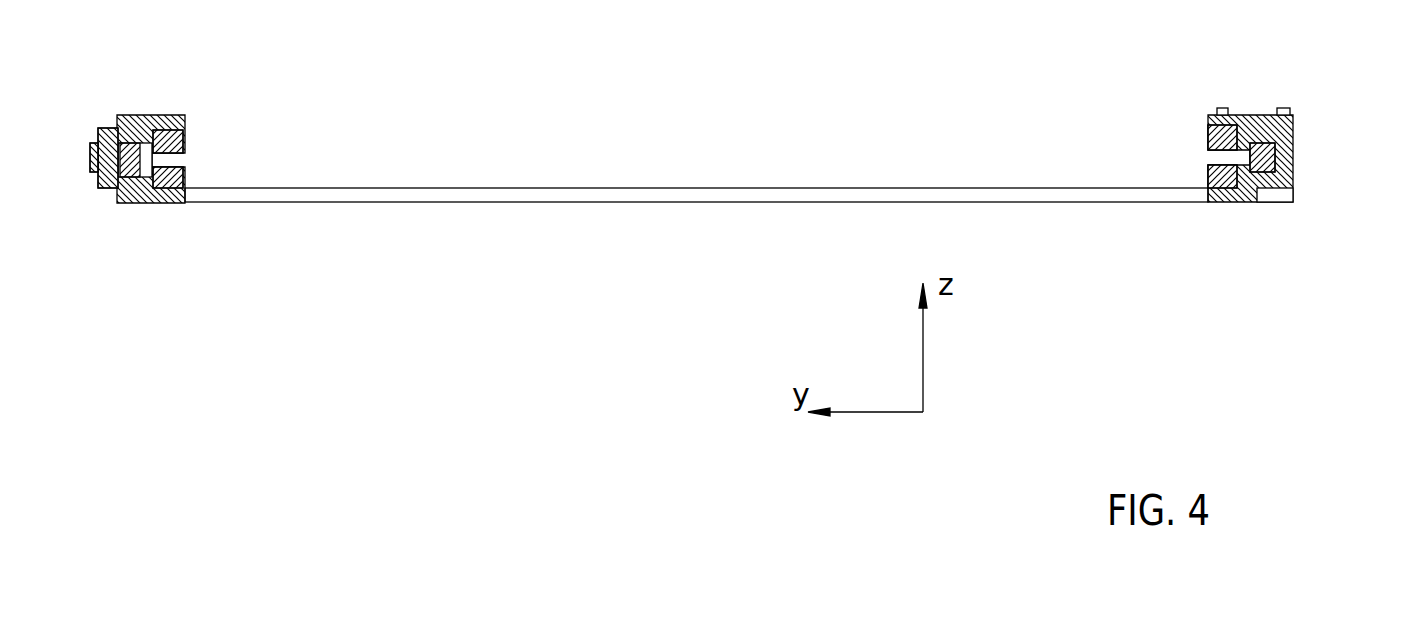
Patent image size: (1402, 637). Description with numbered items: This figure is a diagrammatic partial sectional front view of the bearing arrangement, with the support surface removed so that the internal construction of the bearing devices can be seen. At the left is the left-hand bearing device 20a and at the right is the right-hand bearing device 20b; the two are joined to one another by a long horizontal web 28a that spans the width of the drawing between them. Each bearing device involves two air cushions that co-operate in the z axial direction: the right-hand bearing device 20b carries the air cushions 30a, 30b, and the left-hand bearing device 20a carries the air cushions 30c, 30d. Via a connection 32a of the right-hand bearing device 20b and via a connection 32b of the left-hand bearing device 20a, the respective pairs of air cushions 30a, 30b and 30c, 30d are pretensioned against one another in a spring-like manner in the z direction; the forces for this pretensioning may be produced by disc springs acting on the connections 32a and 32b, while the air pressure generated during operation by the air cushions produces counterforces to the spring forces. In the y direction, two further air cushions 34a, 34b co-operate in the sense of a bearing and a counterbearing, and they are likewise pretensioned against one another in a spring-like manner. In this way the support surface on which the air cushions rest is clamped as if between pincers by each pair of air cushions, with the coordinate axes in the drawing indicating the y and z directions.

The left-hand bearing device 20a is at (146, 190).
The right-hand bearing device 20b is at (1251, 216).
The web 28a is at (595, 193).
The air cushion 30a is at (1208, 134).
The air cushion 30b is at (1208, 180).
The air cushion 30c is at (185, 143).
The air cushion 30d is at (185, 181).
The connection 32a is at (1293, 128).
The connection 32b is at (97, 129).
The air cushion 34a is at (1276, 158).
The air cushion 34b is at (130, 143).